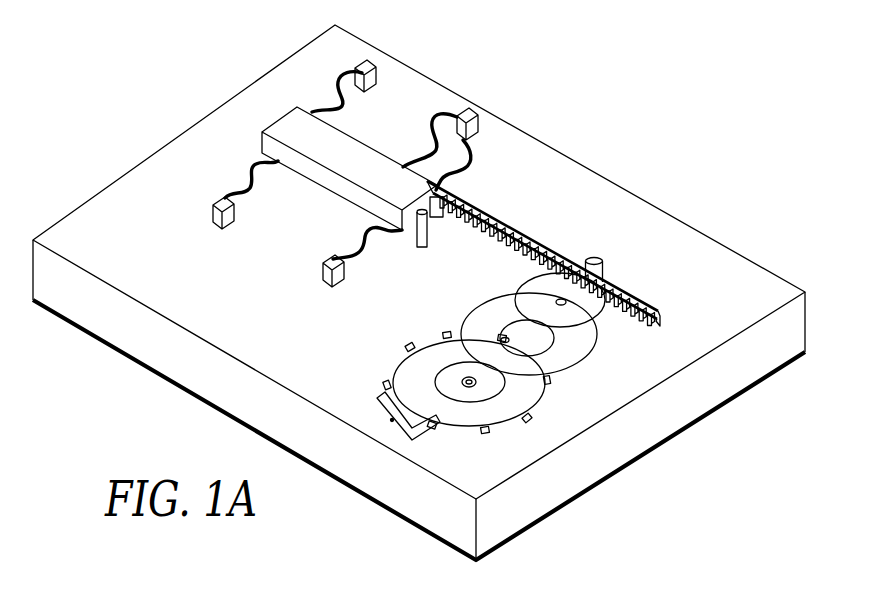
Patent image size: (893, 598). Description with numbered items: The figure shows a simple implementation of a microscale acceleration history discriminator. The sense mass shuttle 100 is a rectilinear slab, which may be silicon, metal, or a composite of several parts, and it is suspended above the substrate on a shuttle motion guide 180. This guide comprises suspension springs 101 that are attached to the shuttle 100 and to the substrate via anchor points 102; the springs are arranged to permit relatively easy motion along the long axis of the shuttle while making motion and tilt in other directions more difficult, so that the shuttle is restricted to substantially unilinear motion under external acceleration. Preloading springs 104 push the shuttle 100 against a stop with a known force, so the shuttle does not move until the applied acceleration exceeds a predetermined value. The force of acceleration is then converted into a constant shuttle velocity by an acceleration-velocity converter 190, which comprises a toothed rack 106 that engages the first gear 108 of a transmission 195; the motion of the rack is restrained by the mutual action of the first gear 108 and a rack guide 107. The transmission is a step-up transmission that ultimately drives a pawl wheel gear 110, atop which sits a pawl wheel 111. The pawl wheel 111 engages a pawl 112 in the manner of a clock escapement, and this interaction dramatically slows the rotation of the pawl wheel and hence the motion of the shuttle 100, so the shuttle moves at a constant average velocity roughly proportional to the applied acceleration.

The sense mass shuttle 100 is at (131, 252).
The suspension springs 101 is at (336, 90).
The anchor points 102 is at (376, 73).
The preloading springs 104 is at (417, 244).
The toothed rack 106 is at (533, 281).
The rack guide 107 is at (602, 257).
The first gear 108 is at (523, 233).
The pawl wheel gear 110 is at (466, 391).
The pawl wheel 111 is at (502, 409).
The pawl 112 is at (375, 408).
The shuttle motion guide 180 is at (430, 53).
The acceleration-velocity converter 190 is at (691, 191).
The transmission 195 is at (668, 470).